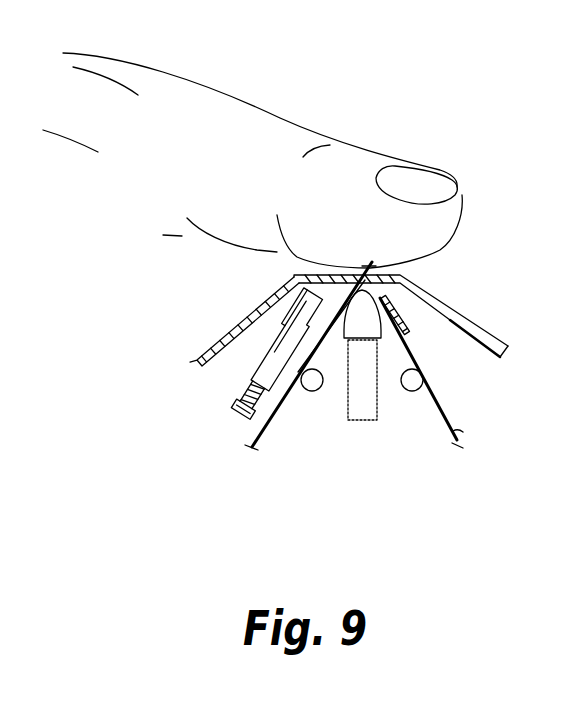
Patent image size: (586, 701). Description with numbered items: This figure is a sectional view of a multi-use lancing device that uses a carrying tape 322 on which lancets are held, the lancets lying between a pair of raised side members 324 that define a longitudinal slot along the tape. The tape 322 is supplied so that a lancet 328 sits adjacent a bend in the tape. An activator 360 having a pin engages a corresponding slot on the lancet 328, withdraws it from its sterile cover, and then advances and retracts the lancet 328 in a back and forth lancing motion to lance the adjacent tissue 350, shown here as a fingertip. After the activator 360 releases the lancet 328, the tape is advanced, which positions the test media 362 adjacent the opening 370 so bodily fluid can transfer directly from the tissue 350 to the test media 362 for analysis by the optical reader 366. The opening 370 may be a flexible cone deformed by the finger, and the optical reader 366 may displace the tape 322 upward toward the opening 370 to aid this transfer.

The carrying tape 322 is at (462, 443).
The raised side members 324 is at (335, 340).
The lancet 328 is at (408, 276).
The tissue 350 is at (345, 170).
The activator 360 is at (244, 367).
The test media 362 is at (290, 273).
The optical reader 366 is at (387, 343).
The opening 370 is at (352, 262).